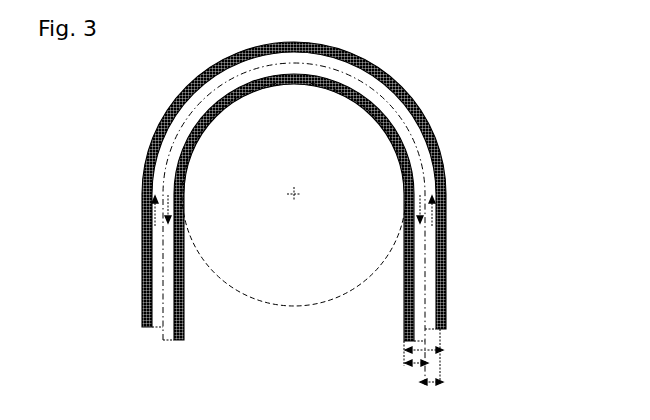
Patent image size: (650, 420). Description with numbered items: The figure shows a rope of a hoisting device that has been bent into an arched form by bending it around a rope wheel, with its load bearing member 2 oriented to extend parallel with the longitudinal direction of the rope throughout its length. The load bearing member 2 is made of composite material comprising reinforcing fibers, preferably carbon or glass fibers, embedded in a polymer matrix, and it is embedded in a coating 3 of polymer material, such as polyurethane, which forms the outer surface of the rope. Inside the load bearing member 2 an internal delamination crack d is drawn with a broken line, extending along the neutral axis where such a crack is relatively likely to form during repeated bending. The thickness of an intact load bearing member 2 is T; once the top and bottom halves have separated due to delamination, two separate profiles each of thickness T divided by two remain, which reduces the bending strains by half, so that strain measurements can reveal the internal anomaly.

The load bearing member 2 is at (418, 137).
The coating 3 is at (398, 87).
The delamination crack d is at (423, 162).
The thickness of the load bearing member T is at (394, 364).